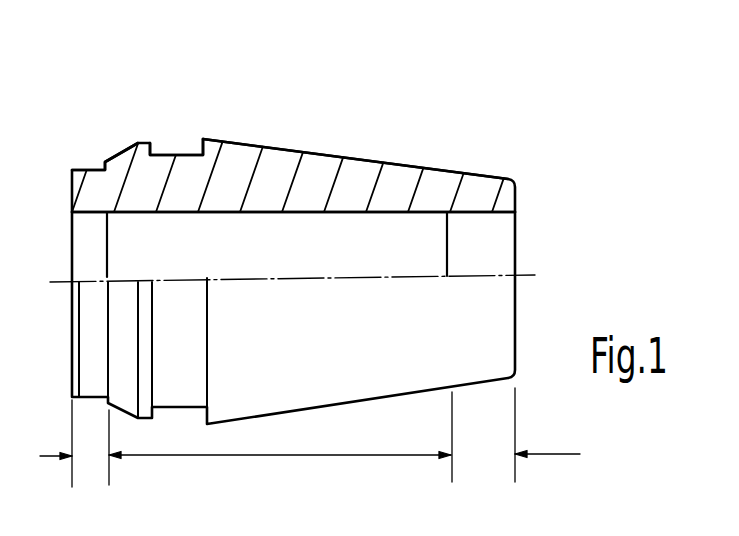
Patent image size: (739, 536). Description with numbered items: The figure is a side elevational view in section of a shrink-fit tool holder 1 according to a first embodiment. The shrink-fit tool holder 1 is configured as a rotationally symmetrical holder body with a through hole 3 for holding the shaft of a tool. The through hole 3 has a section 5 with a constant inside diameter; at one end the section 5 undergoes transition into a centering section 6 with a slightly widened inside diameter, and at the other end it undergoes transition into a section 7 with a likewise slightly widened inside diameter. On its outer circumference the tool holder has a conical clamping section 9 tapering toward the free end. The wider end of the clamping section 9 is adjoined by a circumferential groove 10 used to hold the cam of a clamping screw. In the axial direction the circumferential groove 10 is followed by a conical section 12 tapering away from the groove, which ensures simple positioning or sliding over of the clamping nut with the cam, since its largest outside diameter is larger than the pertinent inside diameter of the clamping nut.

The shrink-fit tool holder 1 is at (372, 143).
The through hole 3 is at (387, 212).
The section with constant inside diameter 5 is at (280, 473).
The centering section 6 is at (74, 443).
The section with slightly widened inside diameter 7 is at (516, 435).
The conical clamping section 9 is at (461, 172).
The circumferential groove 10 is at (180, 155).
The conical section 12 is at (125, 150).